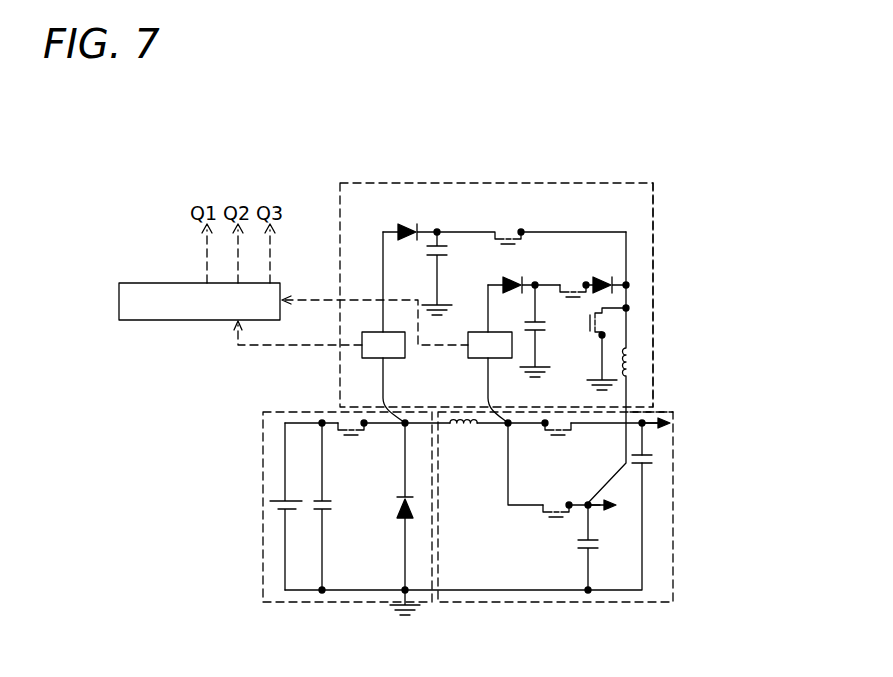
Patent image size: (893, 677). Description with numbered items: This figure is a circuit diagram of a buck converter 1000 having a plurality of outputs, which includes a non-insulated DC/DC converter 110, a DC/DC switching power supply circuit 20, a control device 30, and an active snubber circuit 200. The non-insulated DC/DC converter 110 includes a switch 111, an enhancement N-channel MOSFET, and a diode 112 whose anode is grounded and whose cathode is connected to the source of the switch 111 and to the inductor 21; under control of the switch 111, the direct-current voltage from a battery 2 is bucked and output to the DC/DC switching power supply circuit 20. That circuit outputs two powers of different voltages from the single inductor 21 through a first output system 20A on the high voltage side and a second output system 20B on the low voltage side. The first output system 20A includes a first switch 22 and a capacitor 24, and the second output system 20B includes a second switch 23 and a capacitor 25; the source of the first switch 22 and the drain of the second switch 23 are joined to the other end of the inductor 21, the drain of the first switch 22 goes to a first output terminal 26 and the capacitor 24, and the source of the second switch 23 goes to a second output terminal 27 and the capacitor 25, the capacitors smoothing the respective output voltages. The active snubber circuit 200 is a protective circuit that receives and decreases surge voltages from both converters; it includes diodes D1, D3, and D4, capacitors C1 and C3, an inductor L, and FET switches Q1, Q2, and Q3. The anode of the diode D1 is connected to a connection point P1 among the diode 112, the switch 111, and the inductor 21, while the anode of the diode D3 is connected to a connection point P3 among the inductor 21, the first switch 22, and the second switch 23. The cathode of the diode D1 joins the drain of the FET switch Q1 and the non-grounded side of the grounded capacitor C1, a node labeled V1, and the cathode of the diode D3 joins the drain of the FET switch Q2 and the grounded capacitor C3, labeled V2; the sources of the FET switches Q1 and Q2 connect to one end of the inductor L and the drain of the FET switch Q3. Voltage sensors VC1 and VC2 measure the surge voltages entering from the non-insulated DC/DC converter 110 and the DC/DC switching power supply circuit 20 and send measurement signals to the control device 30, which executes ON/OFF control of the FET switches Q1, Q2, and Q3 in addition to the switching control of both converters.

The buck converter 1000 is at (655, 181).
The active snubber circuit 200 is at (600, 180).
The non-insulated DC/DC converter 110 is at (266, 408).
The DC/DC switching power supply circuit 20 is at (682, 407).
The first output terminal 26 is at (640, 411).
The control device 30 is at (200, 283).
The battery 2 is at (282, 505).
The switch 111 is at (350, 438).
The diode 112 is at (413, 506).
The inductor 21 is at (458, 430).
The first switch 22 is at (554, 438).
The second switch 23 is at (558, 522).
The capacitor 24 is at (653, 460).
The capacitor 25 is at (598, 547).
The second output terminal 27 is at (589, 502).
The first output system 20A is at (674, 423).
The second output system 20B is at (620, 505).
The diode D1 is at (400, 229).
The diode D3 is at (514, 280).
The diode D4 is at (600, 281).
The capacitor C1 is at (442, 250).
The capacitor C3 is at (538, 334).
The voltage node V1 is at (438, 219).
The voltage node V2 is at (543, 273).
The FET switch Q1 is at (512, 242).
The FET switch Q2 is at (578, 292).
The FET switch Q3 is at (596, 325).
The inductor L is at (630, 356).
The connection point P1 is at (398, 420).
The connection point P3 is at (507, 428).
The voltage sensor VC1 is at (383, 327).
The voltage sensor VC2 is at (490, 354).